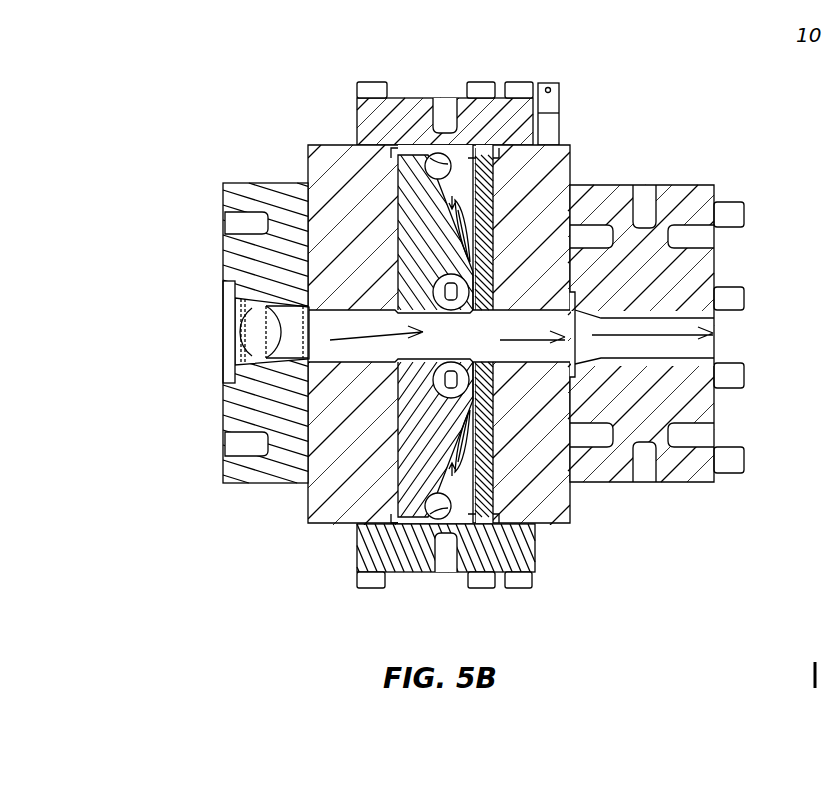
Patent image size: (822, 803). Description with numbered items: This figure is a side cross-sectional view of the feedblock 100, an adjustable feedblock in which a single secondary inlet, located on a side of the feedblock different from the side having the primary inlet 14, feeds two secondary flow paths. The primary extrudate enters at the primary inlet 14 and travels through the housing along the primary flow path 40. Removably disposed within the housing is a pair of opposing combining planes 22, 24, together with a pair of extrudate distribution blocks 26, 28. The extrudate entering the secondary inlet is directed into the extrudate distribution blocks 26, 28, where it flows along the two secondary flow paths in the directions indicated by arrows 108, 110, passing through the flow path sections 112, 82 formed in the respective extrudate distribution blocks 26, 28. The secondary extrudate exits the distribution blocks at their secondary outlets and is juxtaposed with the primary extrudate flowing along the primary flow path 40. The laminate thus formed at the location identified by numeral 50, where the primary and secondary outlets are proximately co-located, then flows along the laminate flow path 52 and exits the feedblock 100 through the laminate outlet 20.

The primary inlet 14 is at (213, 329).
The laminate outlet 20 is at (722, 325).
The combining plane 22 is at (393, 223).
The combining plane 24 is at (318, 488).
The extrudate distribution block 26 is at (410, 155).
The extrudate distribution block 28 is at (412, 480).
The primary flow path 40 is at (345, 340).
The laminate forming location 50 is at (497, 331).
The laminate flow path 52 is at (678, 338).
The flow path section 82 is at (463, 450).
The feedblock 100 is at (618, 76).
The arrow 108 is at (455, 166).
The arrow 110 is at (447, 500).
The flow path section 112 is at (463, 220).